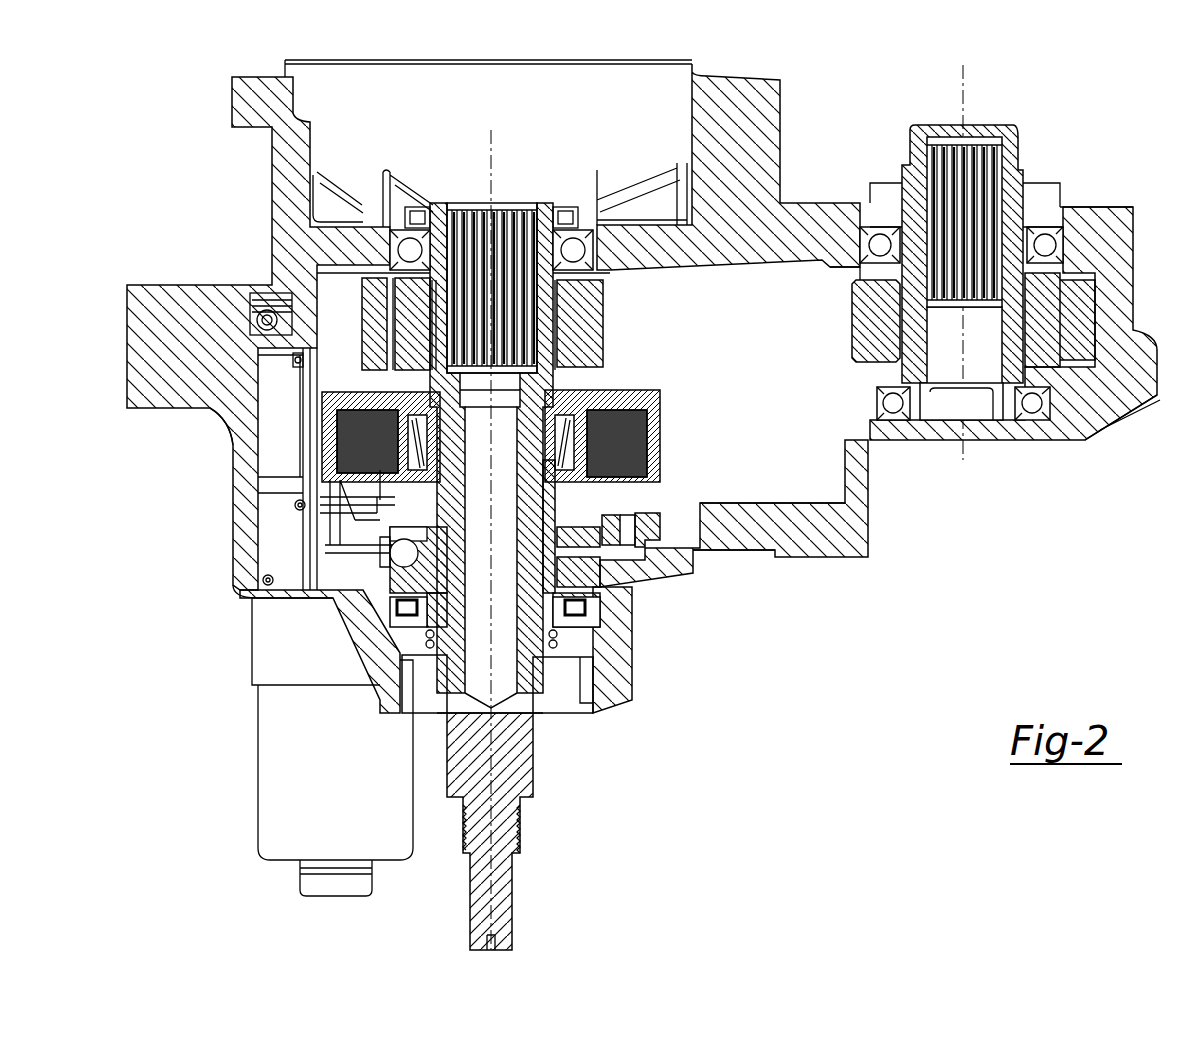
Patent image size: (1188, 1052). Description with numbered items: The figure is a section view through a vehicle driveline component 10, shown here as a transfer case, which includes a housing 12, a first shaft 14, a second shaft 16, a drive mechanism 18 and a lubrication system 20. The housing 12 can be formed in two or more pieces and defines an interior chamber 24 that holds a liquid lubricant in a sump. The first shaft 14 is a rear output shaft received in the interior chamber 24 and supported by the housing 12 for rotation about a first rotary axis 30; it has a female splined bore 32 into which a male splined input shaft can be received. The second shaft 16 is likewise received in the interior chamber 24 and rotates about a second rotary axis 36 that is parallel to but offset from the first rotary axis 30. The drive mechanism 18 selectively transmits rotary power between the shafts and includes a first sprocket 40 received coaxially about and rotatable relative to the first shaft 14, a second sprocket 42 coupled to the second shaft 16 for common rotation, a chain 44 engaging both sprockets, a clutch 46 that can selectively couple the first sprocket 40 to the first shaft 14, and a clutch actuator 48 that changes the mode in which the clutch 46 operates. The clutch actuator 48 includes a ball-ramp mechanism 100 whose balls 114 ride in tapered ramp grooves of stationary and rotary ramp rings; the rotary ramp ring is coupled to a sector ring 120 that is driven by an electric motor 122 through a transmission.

The vehicle driveline component 10 is at (1090, 86).
The housing 12 is at (243, 105).
The first shaft 14 is at (530, 733).
The second shaft 16 is at (1015, 178).
The drive mechanism 18 is at (697, 461).
The lubrication system 20 is at (262, 432).
The interior chamber 24 is at (773, 530).
The first rotary axis 30 is at (497, 824).
The female splined bore 32 is at (470, 203).
The second rotary axis 36 is at (965, 95).
The first sprocket 40 is at (598, 316).
The second sprocket 42 is at (866, 312).
The chain 44 is at (1083, 312).
The clutch 46 is at (642, 458).
The clutch actuator 48 is at (603, 570).
The ball-ramp mechanism 100 is at (402, 573).
The balls 114 is at (400, 550).
The sector ring 120 is at (650, 524).
The electric motor 122 is at (292, 850).